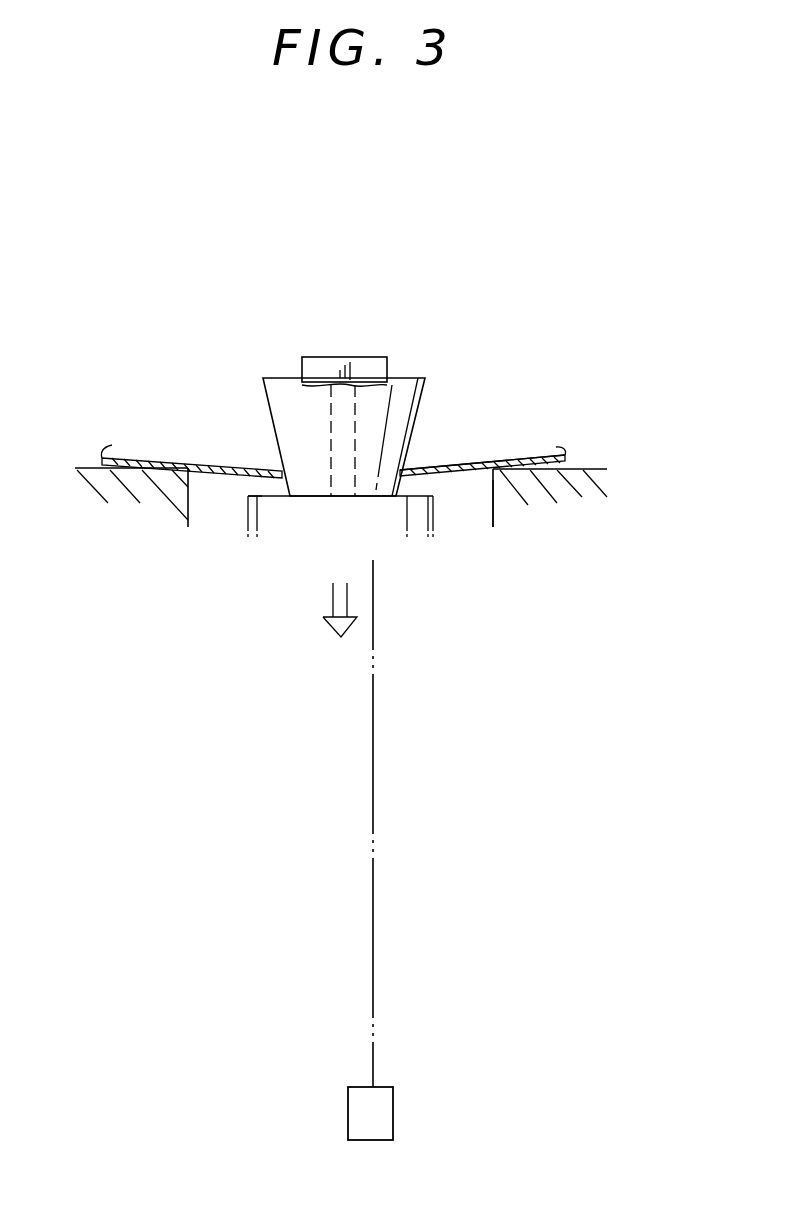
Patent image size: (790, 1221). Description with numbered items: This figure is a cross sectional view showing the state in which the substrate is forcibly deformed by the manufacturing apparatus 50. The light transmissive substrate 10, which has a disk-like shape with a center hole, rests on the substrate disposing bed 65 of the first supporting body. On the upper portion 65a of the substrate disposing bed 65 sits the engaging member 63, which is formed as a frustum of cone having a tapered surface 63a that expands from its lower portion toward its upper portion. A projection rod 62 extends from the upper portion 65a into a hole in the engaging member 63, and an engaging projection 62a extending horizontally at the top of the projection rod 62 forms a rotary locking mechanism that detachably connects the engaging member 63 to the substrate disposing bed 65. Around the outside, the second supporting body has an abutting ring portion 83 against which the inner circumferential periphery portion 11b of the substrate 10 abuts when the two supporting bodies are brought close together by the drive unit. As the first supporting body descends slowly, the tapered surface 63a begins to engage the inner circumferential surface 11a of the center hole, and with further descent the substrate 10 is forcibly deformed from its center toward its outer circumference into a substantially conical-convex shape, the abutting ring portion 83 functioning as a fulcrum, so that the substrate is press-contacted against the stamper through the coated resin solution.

The manufacturing apparatus 50 is at (556, 188).
The engaging member 63 is at (283, 398).
The tapered surface 63a is at (423, 398).
The projection rod 62 is at (350, 433).
The engaging projection 62a is at (375, 362).
The substrate disposing bed 65 is at (415, 520).
The upper portion of the substrate disposing bed 65a is at (260, 497).
The light transmissive substrate 10 is at (552, 443).
The inner circumferential surface of the center hole 11a is at (403, 472).
The inner circumferential periphery portion 11b is at (195, 460).
The abutting ring portion 83 is at (498, 483).